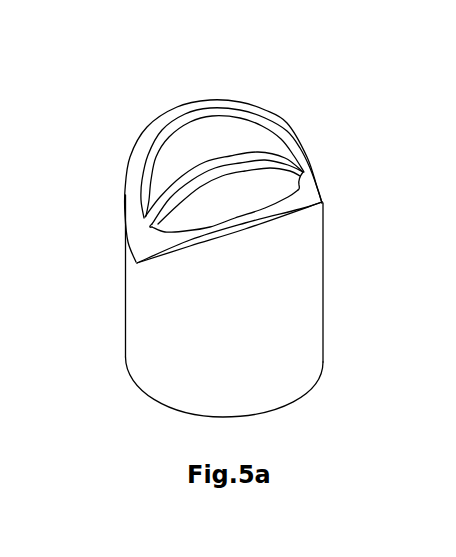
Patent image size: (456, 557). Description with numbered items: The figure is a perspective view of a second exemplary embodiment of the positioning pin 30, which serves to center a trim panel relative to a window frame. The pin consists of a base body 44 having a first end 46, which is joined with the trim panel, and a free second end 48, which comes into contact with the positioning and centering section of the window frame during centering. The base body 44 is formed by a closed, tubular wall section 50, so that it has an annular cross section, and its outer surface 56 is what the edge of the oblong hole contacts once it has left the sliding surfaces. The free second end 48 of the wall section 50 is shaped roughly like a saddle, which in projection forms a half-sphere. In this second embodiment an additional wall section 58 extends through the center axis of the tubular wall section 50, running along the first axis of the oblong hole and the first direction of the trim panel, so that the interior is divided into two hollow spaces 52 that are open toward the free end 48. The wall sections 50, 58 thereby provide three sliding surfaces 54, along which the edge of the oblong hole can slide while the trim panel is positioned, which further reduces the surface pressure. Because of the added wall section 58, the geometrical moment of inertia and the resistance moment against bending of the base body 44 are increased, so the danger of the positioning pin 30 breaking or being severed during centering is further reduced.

The positioning pin 30 is at (97, 112).
The free second end 48 is at (304, 79).
The hollow space 52 is at (197, 142).
The wall section 58 is at (228, 162).
The sliding surface 54 is at (233, 152).
The wall section 50 is at (368, 213).
The base body 44 is at (225, 278).
The outer surface 56 is at (252, 322).
The first end 46 is at (133, 409).